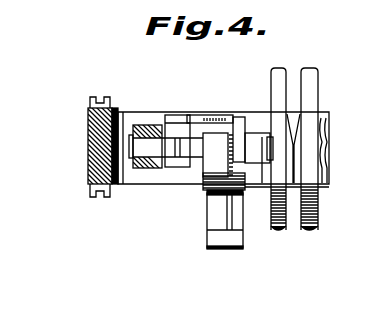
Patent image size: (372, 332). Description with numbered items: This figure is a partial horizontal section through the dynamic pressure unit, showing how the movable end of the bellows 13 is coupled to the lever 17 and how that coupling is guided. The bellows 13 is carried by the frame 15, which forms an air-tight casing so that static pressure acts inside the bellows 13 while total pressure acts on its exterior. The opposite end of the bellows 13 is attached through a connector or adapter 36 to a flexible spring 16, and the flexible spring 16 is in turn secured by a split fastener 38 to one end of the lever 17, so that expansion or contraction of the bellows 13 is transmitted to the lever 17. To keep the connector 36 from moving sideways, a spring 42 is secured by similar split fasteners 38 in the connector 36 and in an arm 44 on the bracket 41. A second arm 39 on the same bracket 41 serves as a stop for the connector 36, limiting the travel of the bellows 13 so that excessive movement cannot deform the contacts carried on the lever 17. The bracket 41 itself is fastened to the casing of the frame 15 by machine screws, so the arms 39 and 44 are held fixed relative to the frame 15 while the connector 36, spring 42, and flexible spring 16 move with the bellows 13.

The bellows 13 is at (311, 68).
The frame 15 is at (88, 150).
The flexible spring 16 is at (171, 113).
The lever 17 is at (145, 124).
The connector 36 is at (254, 162).
The split fastener 38 is at (138, 170).
The arm 39 is at (240, 115).
The bracket 41 is at (194, 118).
The spring 42 is at (227, 210).
The arm 44 is at (217, 238).